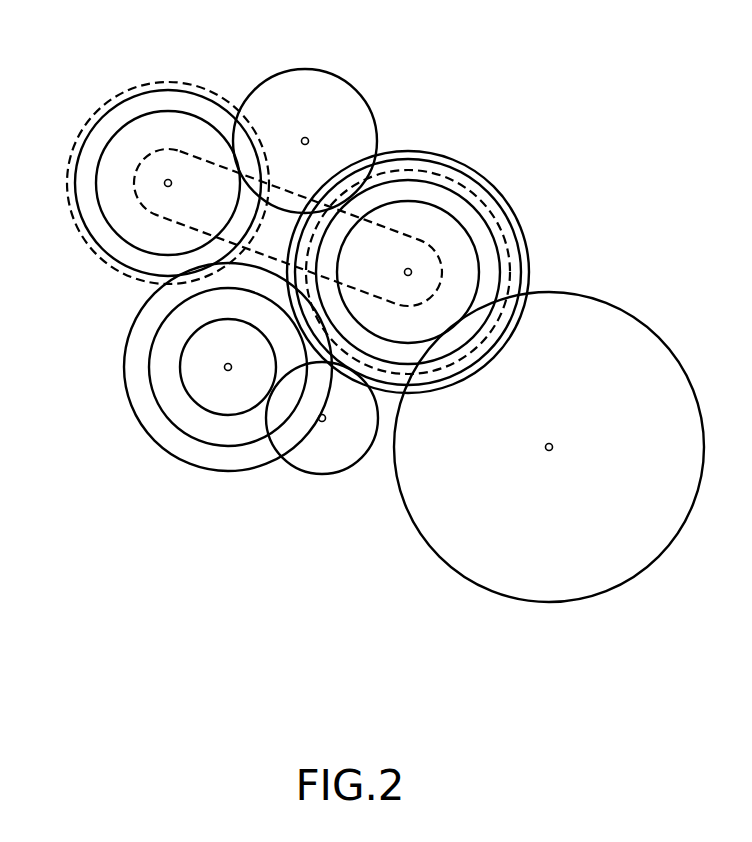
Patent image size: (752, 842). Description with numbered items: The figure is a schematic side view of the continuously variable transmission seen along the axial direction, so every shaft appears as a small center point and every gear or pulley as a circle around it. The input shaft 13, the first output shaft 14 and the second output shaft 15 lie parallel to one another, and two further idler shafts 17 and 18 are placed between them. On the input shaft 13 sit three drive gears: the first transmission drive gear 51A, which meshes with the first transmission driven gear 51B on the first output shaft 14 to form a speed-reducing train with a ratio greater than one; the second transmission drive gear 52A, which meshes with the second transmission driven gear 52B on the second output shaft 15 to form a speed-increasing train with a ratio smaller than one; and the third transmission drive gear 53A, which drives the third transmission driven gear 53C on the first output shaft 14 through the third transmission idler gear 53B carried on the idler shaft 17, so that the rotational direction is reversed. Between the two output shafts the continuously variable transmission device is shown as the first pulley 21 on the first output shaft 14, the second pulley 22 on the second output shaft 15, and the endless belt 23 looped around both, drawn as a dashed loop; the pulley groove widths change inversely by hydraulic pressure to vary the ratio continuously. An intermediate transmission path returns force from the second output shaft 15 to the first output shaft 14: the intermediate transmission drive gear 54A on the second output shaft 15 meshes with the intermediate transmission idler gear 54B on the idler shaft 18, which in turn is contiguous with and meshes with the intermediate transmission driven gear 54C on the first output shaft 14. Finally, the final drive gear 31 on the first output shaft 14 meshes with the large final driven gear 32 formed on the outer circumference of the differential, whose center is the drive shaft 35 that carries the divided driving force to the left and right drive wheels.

The input shaft 13 is at (227, 368).
The first output shaft 14 is at (410, 271).
The second output shaft 15 is at (165, 186).
The idler shaft 17 is at (322, 421).
The idler shaft 18 is at (305, 136).
The first pulley 21 is at (507, 247).
The second pulley 22 is at (73, 222).
The endless belt 23 is at (200, 158).
The final drive gear 31 is at (480, 273).
The final driven gear 32 is at (595, 294).
The drive shaft 35 is at (550, 444).
The first transmission drive gear 51A is at (148, 363).
The first transmission driven gear 51B is at (433, 152).
The second transmission drive gear 52A is at (130, 327).
The second transmission driven gear 52B is at (135, 268).
The third transmission drive gear 53A is at (240, 415).
The third transmission idler gear 53B is at (318, 474).
The third transmission driven gear 53C is at (395, 384).
The intermediate transmission drive gear 54A is at (200, 115).
The intermediate transmission idler gear 54B is at (277, 73).
The intermediate transmission driven gear 54C is at (399, 180).